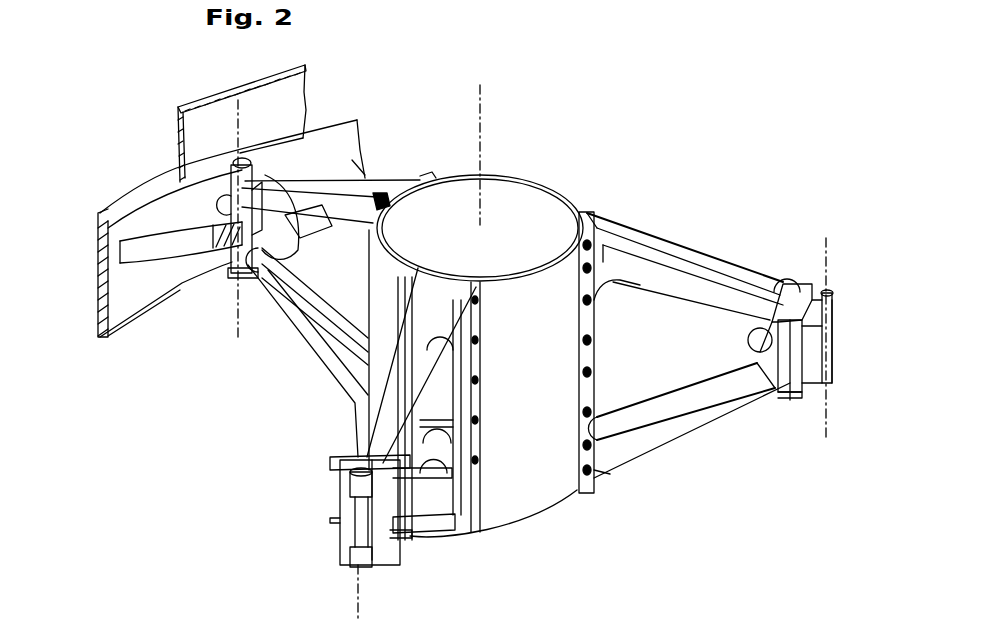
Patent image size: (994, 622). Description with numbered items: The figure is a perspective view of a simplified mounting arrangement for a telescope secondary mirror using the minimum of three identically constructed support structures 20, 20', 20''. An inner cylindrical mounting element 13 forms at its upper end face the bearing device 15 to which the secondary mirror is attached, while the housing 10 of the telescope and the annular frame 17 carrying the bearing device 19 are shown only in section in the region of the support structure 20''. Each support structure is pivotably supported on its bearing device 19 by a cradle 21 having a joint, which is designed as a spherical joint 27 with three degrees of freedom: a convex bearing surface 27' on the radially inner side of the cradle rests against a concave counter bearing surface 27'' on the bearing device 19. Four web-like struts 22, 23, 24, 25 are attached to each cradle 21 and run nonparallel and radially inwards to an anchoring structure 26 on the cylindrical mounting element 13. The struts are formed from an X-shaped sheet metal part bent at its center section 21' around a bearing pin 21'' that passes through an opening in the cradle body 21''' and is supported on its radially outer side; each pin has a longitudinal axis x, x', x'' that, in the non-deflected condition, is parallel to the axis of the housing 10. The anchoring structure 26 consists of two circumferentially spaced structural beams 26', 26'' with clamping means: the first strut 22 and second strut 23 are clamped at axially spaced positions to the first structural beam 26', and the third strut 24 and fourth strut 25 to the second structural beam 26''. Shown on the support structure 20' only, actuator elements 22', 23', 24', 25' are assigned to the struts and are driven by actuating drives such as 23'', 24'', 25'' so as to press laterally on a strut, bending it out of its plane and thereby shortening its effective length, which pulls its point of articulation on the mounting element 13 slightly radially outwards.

The housing 10 is at (182, 132).
The cylindrical mounting element 13 is at (542, 503).
The bearing device 15 is at (546, 183).
The annular frame 17 is at (177, 273).
The bearing device 19 is at (205, 256).
The support structure 20 is at (706, 194).
The support structure 20' is at (436, 443).
The support structure 20'' is at (331, 216).
The cradle 21 is at (780, 278).
The center section 21' is at (859, 350).
The bearing pin 21'' is at (847, 313).
The cradle body 21''' is at (809, 439).
The first strut 22 is at (685, 220).
The actuator element 22' is at (584, 330).
The second strut 23 is at (681, 389).
The actuator element 23' is at (404, 576).
The actuating drive 23'' is at (719, 328).
The third strut 24 is at (692, 446).
The actuator element 24' is at (323, 513).
The actuating drive 24'' is at (777, 438).
The fourth strut 25 is at (693, 260).
The actuator element 25' is at (329, 367).
The actuating drive 25'' is at (846, 313).
The anchoring structure 26 is at (626, 313).
The first structural beam 26' is at (604, 304).
The second structural beam 26'' is at (632, 505).
The spherical joint 27 is at (746, 411).
The convex bearing surface 27' is at (831, 419).
The concave bearing surface 27'' is at (274, 189).
The longitudinal axis x is at (843, 324).
The longitudinal axis x' is at (417, 335).
The longitudinal axis x'' is at (260, 237).